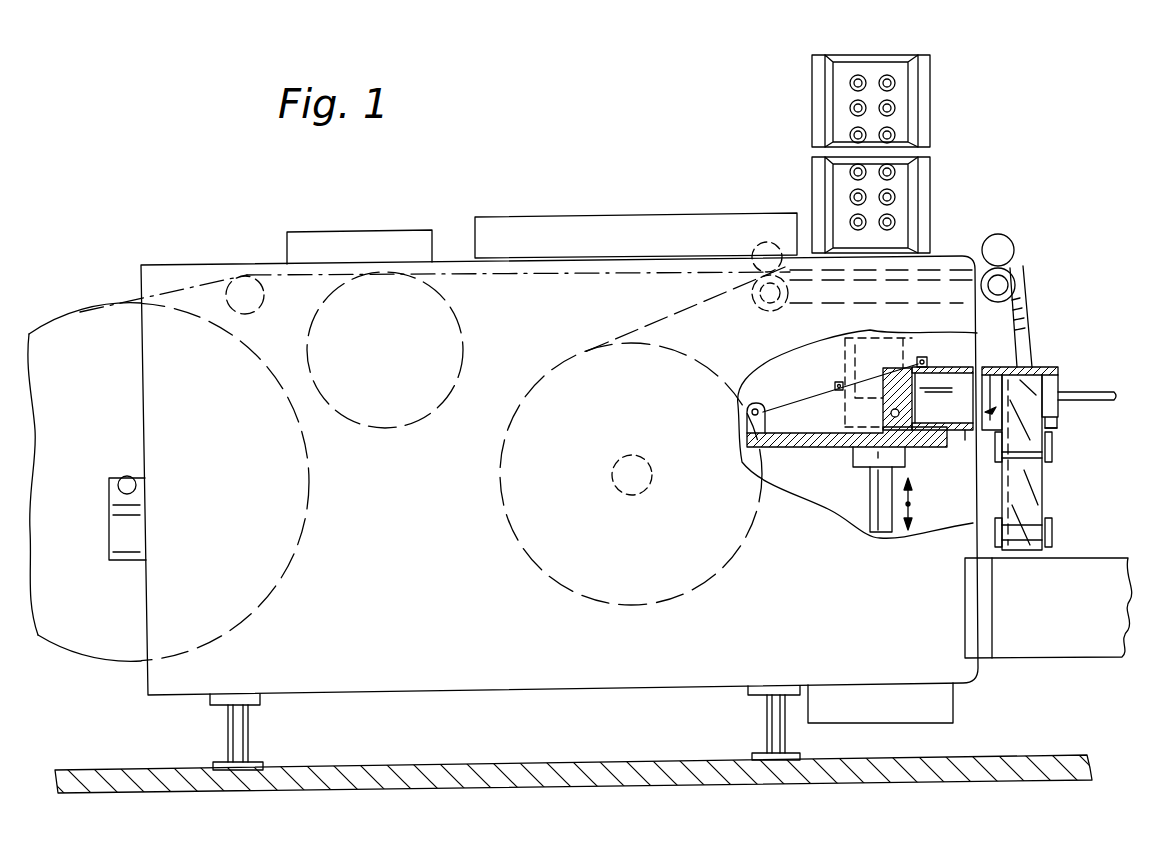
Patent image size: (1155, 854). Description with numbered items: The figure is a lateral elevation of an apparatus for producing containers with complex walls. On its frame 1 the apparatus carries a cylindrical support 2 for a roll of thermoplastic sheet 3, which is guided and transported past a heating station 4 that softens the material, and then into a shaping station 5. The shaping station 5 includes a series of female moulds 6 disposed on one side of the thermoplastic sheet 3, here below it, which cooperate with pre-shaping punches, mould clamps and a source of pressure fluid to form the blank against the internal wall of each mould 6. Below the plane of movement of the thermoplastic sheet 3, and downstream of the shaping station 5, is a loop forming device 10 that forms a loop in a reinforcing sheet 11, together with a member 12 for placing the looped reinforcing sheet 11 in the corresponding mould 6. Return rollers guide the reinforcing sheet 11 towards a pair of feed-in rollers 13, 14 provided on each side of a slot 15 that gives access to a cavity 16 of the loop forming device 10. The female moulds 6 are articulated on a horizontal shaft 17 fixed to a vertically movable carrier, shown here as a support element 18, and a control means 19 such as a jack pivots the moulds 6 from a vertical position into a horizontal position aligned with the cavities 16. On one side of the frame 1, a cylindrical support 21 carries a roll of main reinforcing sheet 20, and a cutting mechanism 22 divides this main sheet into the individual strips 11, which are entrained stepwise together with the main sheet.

The frame 1 is at (389, 657).
The cylindrical support 2 is at (127, 477).
The thermoplastic sheet 3 is at (125, 300).
The heating station 4 is at (572, 216).
The shaping station 5 is at (941, 120).
The female mould 6 is at (961, 368).
The loop forming device 10 is at (1056, 363).
The reinforcing sheet 11 is at (1023, 320).
The placing member 12 is at (1058, 386).
The feed-in roller 13 is at (1052, 462).
The feed-in roller 14 is at (1062, 511).
The slot 15 is at (1055, 430).
The cavity 16 is at (973, 437).
The horizontal shaft 17 is at (890, 414).
The support bar 18 is at (833, 440).
The control means 19 is at (773, 407).
The main reinforcing sheet 20 is at (600, 605).
The cylindrical support 21 is at (640, 492).
The cutting mechanism 22 is at (772, 242).